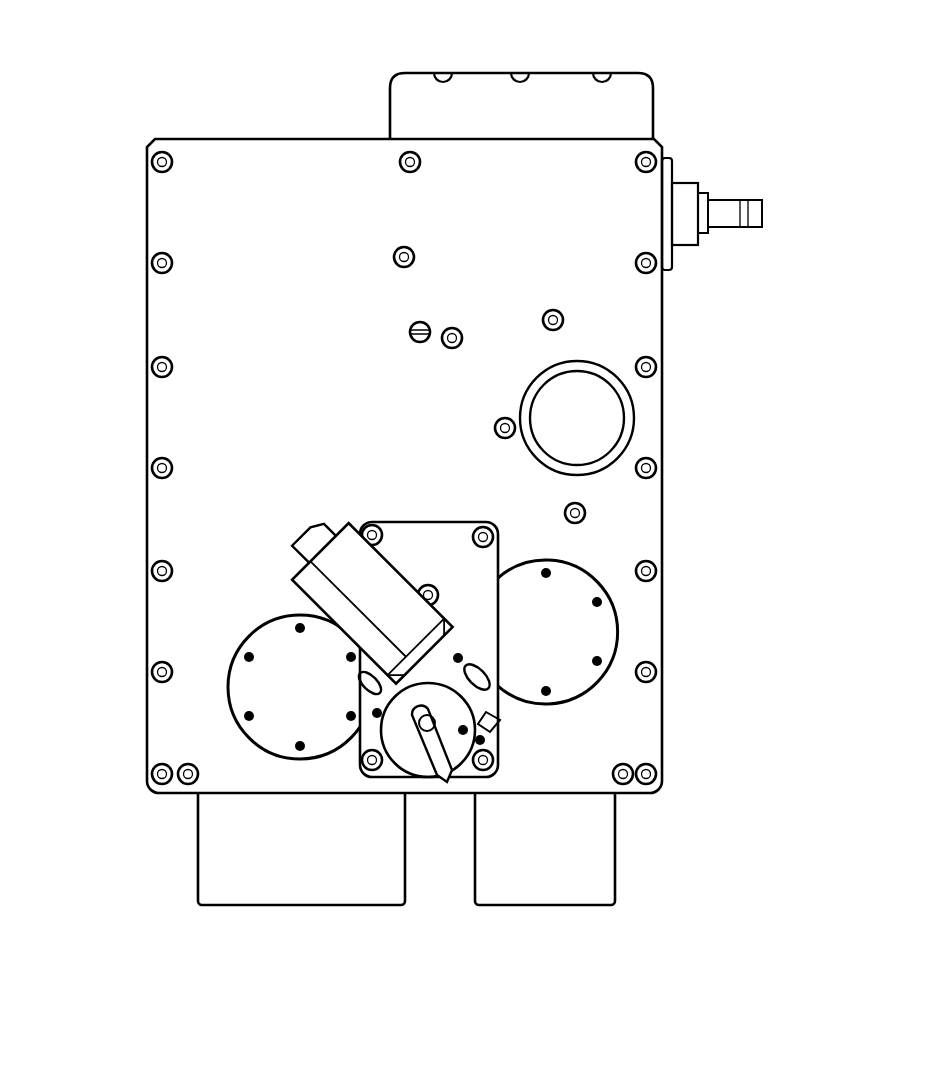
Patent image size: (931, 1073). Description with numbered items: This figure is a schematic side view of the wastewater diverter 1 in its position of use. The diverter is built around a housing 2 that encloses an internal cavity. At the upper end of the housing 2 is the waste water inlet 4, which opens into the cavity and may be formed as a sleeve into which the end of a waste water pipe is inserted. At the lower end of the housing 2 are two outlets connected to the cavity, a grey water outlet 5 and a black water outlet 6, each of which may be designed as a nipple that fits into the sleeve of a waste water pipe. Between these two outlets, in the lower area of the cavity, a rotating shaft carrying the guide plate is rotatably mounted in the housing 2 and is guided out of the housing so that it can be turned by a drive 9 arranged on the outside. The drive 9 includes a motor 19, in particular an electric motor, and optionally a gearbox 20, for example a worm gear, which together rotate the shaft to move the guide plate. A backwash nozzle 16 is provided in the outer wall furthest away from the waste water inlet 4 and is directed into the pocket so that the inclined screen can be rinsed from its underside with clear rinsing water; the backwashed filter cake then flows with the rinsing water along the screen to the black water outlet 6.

The wastewater diverter 1 is at (135, 72).
The housing 2 is at (180, 320).
The waste water inlet 4 is at (265, 137).
The grey water outlet 5 is at (600, 857).
The black water outlet 6 is at (220, 848).
The drive 9 is at (391, 558).
The backwash nozzle 16 is at (685, 197).
The motor 19 is at (337, 580).
The gearbox 20 is at (467, 718).